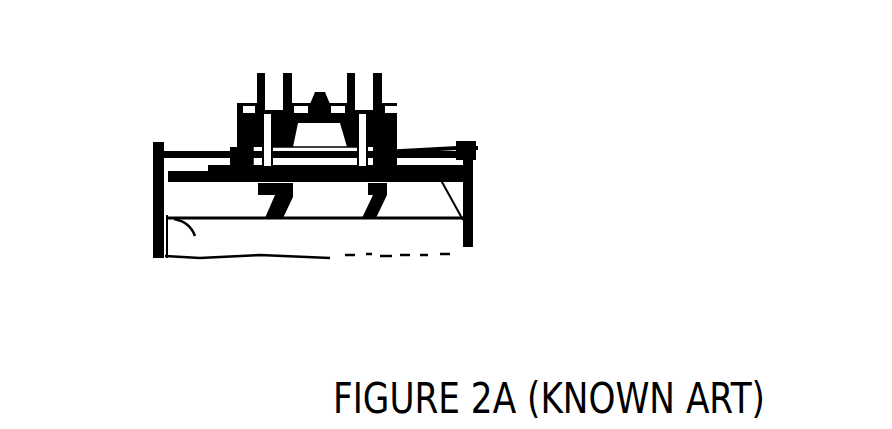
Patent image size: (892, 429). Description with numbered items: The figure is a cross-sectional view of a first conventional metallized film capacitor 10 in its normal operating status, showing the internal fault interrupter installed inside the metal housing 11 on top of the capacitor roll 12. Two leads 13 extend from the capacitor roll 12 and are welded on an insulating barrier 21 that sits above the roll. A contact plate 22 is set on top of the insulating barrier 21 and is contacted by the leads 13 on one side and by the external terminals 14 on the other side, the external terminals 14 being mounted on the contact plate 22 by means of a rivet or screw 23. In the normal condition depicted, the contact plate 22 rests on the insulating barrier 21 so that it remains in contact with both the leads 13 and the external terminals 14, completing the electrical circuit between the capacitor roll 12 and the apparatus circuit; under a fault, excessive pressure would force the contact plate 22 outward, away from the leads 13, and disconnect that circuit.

The metallized film capacitor 10 is at (566, 96).
The metal housing 11 is at (153, 237).
The capacitor roll 12 is at (150, 203).
The leads 13 is at (268, 208).
The external terminals 14 is at (258, 88).
The insulating barrier 21 is at (476, 224).
The contact plate 22 is at (480, 148).
The rivet or screw 23 is at (252, 148).